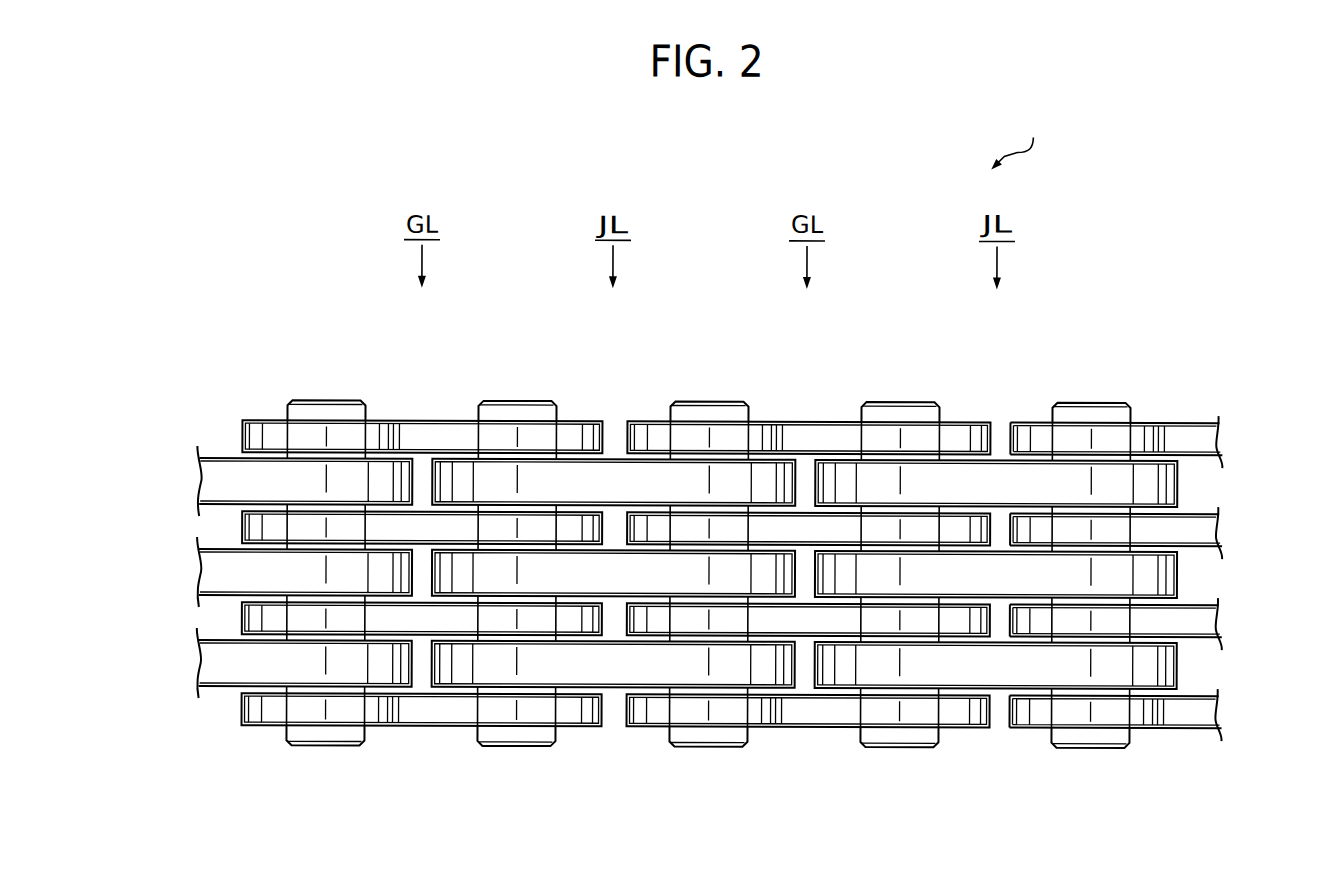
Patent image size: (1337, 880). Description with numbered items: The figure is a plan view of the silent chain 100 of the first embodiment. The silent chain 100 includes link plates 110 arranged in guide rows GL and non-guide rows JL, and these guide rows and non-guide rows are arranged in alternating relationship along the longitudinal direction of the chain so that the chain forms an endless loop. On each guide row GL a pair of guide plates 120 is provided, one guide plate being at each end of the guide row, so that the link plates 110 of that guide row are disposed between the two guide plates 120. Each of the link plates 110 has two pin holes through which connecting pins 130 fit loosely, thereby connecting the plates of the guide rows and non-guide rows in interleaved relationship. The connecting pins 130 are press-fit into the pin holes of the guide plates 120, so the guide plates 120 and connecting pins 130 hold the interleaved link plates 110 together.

The silent chain 100 is at (1012, 133).
The link plates 110 is at (708, 574).
The guide plates 120 is at (765, 562).
The connecting pins 130 is at (708, 540).